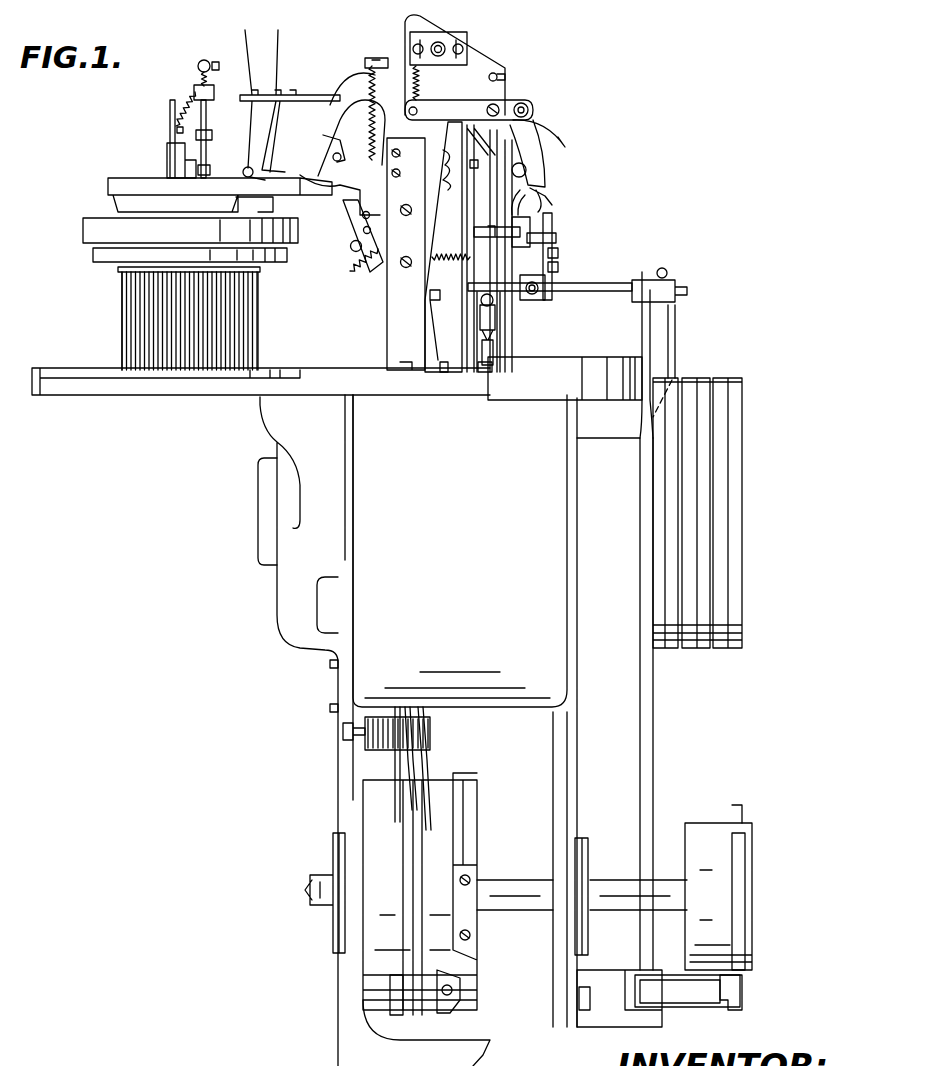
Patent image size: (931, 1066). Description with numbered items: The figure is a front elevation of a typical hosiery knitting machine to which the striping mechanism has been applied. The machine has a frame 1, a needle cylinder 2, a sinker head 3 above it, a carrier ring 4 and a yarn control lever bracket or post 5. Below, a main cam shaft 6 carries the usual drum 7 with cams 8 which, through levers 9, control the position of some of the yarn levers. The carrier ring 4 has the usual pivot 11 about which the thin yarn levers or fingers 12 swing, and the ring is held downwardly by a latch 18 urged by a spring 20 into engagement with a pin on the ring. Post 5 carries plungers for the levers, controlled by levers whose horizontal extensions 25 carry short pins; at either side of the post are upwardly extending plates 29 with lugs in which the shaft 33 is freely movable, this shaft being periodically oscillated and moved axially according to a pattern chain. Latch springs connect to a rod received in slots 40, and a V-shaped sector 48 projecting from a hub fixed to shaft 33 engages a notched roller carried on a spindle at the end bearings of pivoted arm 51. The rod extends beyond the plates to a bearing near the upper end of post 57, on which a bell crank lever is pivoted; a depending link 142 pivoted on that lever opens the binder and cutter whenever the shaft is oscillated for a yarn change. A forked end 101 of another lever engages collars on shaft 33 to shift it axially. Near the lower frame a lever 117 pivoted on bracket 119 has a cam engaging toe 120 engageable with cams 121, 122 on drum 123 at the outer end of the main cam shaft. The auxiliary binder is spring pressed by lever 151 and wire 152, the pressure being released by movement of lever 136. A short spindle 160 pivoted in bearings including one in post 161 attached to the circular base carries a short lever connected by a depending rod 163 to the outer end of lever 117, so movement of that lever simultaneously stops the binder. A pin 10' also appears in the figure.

The frame 1 is at (350, 768).
The needle cylinder 2 is at (258, 325).
The sinker head 3 is at (90, 229).
The carrier ring 4 is at (110, 187).
The yarn control lever bracket or post 5 is at (406, 254).
The main cam shaft 6 is at (518, 890).
The drum 7 is at (420, 894).
The cams 8 is at (420, 1005).
The levers 9 is at (422, 778).
The pin 10' is at (455, 359).
The pivot 11 is at (336, 165).
The yarn levers or fingers 12 is at (267, 178).
The latch 18 is at (350, 236).
The spring 20 is at (362, 266).
The extension 25 is at (466, 210).
The plate 29 is at (432, 247).
The shaft 33 is at (540, 192).
The slots 40 is at (505, 74).
The sector 48 is at (565, 137).
The arm 51 is at (515, 100).
The post 57 is at (466, 383).
The forked end 101 is at (535, 202).
The lever 117 is at (687, 991).
The bracket 119 is at (610, 1020).
The cam engaging toe 120 is at (742, 992).
The cam 121 is at (740, 888).
The cam 122 is at (742, 808).
The drum 123 is at (705, 833).
The lever 136 is at (172, 124).
The depending link 142 is at (470, 240).
The lever 151 is at (205, 150).
The wire 152 is at (203, 112).
The short spindle 160 is at (594, 291).
The post 161 is at (645, 333).
The depending rod 163 is at (645, 730).